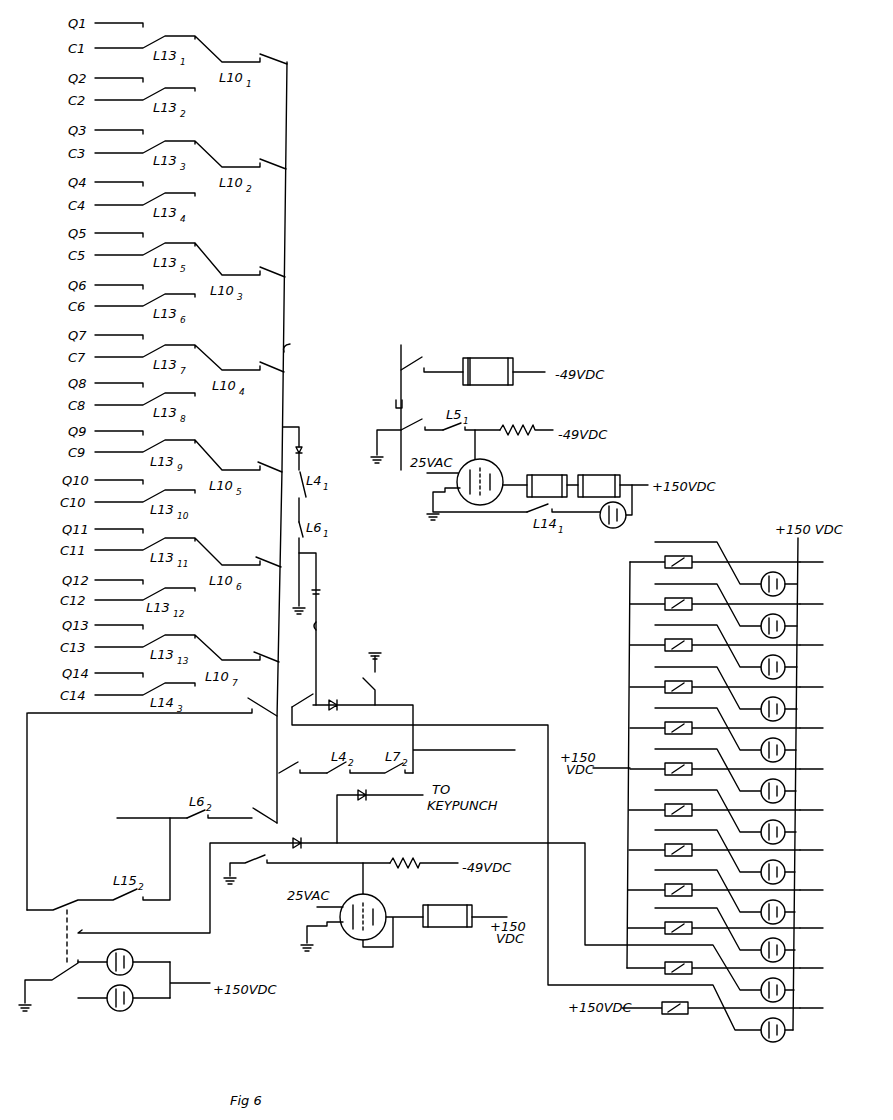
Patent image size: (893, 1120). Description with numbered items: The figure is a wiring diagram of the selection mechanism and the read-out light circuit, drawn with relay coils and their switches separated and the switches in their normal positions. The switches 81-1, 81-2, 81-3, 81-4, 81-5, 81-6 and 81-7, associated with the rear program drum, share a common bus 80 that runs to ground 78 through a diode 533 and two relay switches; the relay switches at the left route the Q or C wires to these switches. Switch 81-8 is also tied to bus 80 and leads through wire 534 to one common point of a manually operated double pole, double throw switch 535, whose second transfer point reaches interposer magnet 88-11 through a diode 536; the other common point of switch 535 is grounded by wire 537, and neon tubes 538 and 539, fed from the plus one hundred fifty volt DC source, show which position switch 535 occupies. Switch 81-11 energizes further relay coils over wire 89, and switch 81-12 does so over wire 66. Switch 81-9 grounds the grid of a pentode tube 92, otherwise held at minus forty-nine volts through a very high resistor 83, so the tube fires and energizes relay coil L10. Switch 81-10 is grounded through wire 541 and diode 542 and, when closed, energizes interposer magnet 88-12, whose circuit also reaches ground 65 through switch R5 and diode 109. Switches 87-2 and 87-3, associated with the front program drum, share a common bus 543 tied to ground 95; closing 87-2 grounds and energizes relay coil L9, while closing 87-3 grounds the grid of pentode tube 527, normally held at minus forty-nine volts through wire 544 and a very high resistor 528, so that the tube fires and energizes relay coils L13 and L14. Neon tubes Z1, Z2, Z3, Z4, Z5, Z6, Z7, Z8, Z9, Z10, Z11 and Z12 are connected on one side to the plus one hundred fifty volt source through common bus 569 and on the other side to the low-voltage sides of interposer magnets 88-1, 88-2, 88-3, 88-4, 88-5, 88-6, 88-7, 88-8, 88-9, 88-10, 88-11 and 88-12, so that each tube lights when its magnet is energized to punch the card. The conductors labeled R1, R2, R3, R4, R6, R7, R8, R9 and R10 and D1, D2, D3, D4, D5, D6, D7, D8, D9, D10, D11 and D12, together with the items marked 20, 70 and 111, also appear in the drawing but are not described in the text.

The common bus 80 is at (298, 343).
The switch 81-1 is at (282, 53).
The switch 81-2 is at (267, 154).
The switch 81-3 is at (266, 262).
The switch 81-4 is at (264, 357).
The switch 81-5 is at (265, 456).
The switch 81-6 is at (262, 552).
The switch 81-7 is at (261, 648).
The switch 81-8 is at (258, 700).
The switch 81-9 is at (307, 871).
The switch 81-10 is at (300, 692).
The switch 81-11 is at (255, 805).
The switch 81-12 is at (303, 761).
The switch 87-2 is at (432, 359).
The switch 87-3 is at (422, 419).
The common bus 543 is at (384, 399).
The ground 95 is at (380, 454).
The wire 544 is at (470, 427).
The resistor 528 is at (526, 438).
The pentode tube 527 is at (500, 468).
The capacitor 20 is at (600, 522).
The diode 533 is at (315, 451).
The diode 542 is at (331, 591).
The wire 541 is at (332, 627).
The ground 78 is at (292, 617).
The ground 65 is at (385, 649).
The diode 109 is at (330, 697).
The conductor 70 is at (526, 868).
The wire 66 is at (474, 740).
The diode to keypunch 111 is at (380, 816).
The wire 534 is at (28, 727).
The wire 89 is at (152, 809).
The diode 536 is at (297, 836).
The double pole, double throw switch 535 is at (51, 936).
The wire 537 is at (28, 990).
The neon tube 538 is at (129, 952).
The neon tube 539 is at (128, 1008).
The resistor 83 is at (424, 855).
The pentode tube 92 is at (390, 895).
The common bus 569 is at (796, 557).
The relay coil L9 is at (504, 371).
The relay coil L10 is at (465, 916).
The relay coil L13 is at (552, 486).
The relay coil L14 is at (613, 486).
The switch R5 is at (360, 680).
The interposer magnet 88-1 is at (715, 554).
The interposer magnet 88-2 is at (715, 596).
The interposer magnet 88-3 is at (715, 637).
The interposer magnet 88-4 is at (715, 679).
The interposer magnet 88-5 is at (715, 720).
The interposer magnet 88-6 is at (715, 761).
The interposer magnet 88-7 is at (714, 802).
The interposer magnet 88-8 is at (714, 842).
The interposer magnet 88-9 is at (714, 882).
The interposer magnet 88-10 is at (714, 920).
The interposer magnet 88-11 is at (713, 960).
The interposer magnet 88-12 is at (663, 1016).
The input line R1 is at (697, 559).
The input line R2 is at (697, 601).
The input line R3 is at (697, 642).
The input line R4 is at (697, 684).
The input line R6 is at (697, 766).
The input line R7 is at (697, 807).
The input line R8 is at (697, 847).
The input line R9 is at (697, 887).
The input line R10 is at (696, 925).
The neon tube Z1 is at (770, 579).
The neon tube Z2 is at (770, 621).
The neon tube Z3 is at (770, 662).
The neon tube Z4 is at (770, 704).
The neon tube Z5 is at (770, 745).
The neon tube Z6 is at (770, 786).
The neon tube Z7 is at (770, 827).
The neon tube Z8 is at (769, 867).
The neon tube Z9 is at (769, 907).
The neon tube Z10 is at (768, 945).
The neon tube Z11 is at (768, 985).
The neon tube Z12 is at (767, 1025).
The output line D1 is at (816, 554).
The output line D2 is at (816, 596).
The output line D3 is at (816, 637).
The output line D4 is at (816, 679).
The output line D5 is at (816, 720).
The output line D6 is at (816, 761).
The output line D7 is at (817, 802).
The output line D8 is at (816, 842).
The output line D9 is at (816, 882).
The output line D10 is at (820, 920).
The output line D11 is at (820, 960).
The output line D12 is at (820, 1000).